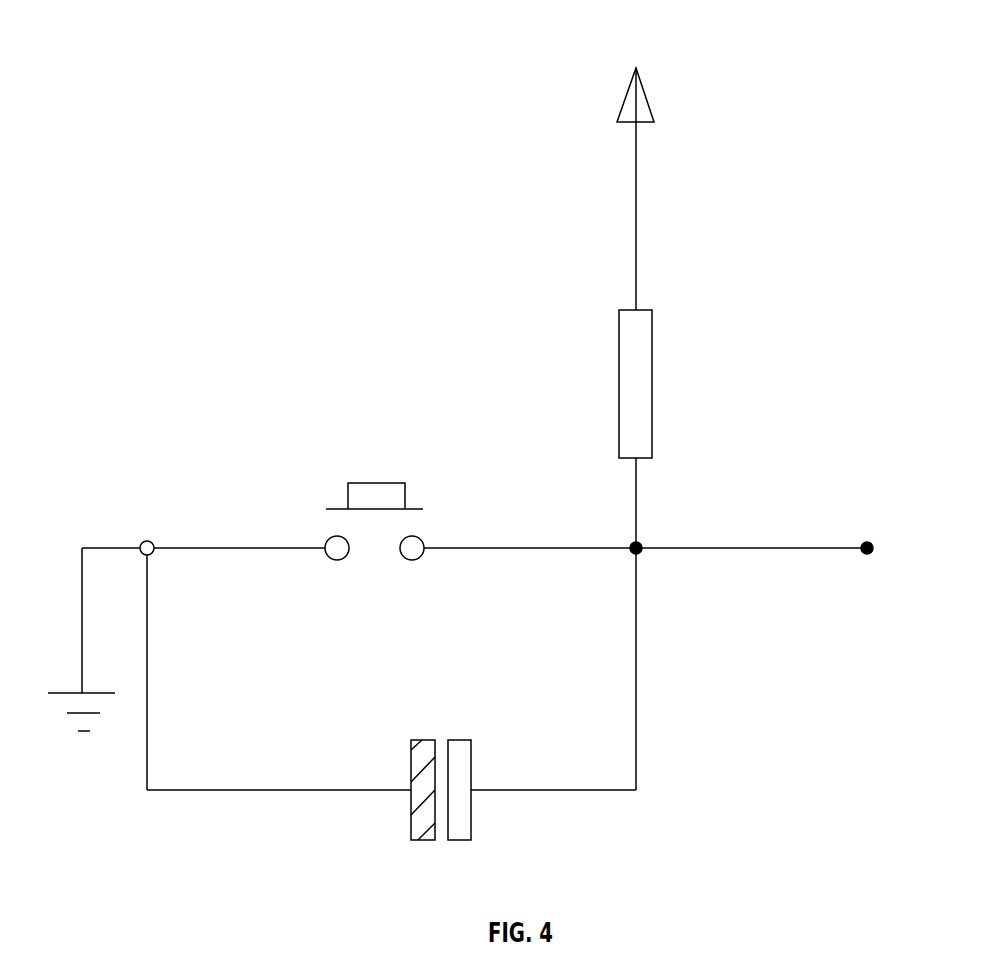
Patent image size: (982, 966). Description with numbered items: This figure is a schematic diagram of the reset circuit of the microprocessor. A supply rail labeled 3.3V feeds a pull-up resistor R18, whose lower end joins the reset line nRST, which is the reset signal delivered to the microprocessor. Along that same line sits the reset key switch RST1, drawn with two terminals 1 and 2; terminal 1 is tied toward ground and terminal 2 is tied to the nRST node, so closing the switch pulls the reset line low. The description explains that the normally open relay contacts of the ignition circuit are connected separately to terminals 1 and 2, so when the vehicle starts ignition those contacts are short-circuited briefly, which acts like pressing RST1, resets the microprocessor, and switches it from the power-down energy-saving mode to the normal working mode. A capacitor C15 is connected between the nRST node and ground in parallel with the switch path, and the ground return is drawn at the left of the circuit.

The pull-up resistor R18 is at (678, 384).
The capacitor C15 is at (444, 792).
The reset key switch RST1 is at (372, 524).
The reset circuit terminal 1 is at (324, 533).
The reset circuit terminal 2 is at (425, 533).
The reset signal net nRST is at (751, 569).
The power supply 3.3V is at (646, 160).